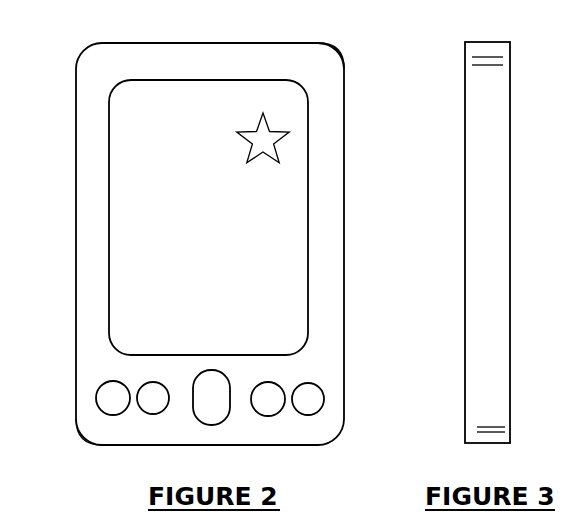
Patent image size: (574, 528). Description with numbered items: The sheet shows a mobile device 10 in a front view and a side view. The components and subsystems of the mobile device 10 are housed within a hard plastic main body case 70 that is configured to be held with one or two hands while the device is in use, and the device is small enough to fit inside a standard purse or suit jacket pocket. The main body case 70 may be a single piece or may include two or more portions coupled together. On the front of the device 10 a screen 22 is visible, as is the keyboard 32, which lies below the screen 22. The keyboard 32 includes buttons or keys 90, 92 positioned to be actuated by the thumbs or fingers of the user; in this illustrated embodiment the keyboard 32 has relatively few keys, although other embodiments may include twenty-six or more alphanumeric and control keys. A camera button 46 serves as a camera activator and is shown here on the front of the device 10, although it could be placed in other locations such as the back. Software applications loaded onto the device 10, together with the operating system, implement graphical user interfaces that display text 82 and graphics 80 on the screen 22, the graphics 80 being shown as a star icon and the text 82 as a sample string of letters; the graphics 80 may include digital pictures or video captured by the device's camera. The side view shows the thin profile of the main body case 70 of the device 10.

In FIG. 2, the mobile device 10 is at (76, 125).
In FIG. 3, the mobile device 10 is at (465, 122).
In FIG. 2, the screen 22 is at (124, 175).
In FIG. 2, the keyboard 32 is at (133, 426).
In FIG. 2, the camera button 46 is at (318, 388).
In FIG. 2, the main body case 70 is at (345, 113).
In FIG. 3, the main body case 70 is at (495, 47).
In FIG. 2, the graphics 80 is at (250, 143).
In FIG. 2, the text 82 is at (205, 205).
In FIG. 2, the button or key 90 is at (212, 424).
In FIG. 2, the buttons or keys 92 is at (152, 383).